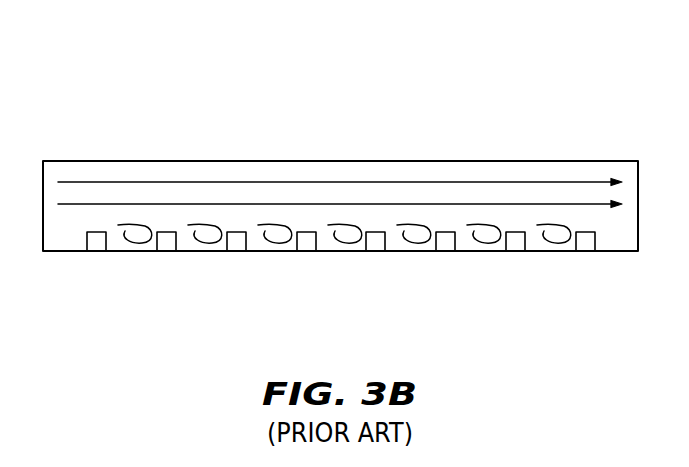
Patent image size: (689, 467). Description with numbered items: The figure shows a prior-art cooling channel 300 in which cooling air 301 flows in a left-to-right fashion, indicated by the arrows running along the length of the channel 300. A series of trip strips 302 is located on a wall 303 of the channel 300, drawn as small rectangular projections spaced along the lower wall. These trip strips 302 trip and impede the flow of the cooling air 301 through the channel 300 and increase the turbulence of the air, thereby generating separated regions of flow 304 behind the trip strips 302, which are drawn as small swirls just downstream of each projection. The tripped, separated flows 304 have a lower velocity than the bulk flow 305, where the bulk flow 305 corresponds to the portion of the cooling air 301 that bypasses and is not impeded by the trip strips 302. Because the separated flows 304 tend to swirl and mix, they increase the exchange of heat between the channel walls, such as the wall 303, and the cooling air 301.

The channel 300 is at (539, 91).
The cooling air 301 is at (117, 183).
The trip strips 302 is at (235, 252).
The wall 303 is at (338, 252).
The separated regions of flow 304 is at (477, 252).
The bulk flow 305 is at (410, 204).